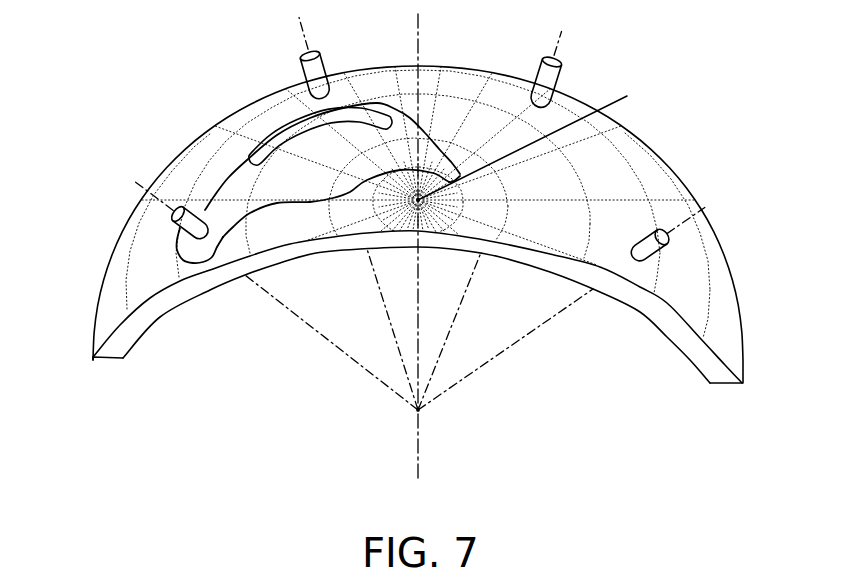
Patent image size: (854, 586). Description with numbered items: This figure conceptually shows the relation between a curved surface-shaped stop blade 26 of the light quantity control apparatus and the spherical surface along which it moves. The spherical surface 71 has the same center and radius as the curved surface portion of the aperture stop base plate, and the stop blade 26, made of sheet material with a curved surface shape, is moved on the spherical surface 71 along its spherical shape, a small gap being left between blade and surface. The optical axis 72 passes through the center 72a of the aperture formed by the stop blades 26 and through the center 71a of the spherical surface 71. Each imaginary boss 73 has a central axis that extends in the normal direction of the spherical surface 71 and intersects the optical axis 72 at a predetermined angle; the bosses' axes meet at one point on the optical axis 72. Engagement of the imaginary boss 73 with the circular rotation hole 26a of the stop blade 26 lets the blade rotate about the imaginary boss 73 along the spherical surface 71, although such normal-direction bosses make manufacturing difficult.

The spherical surface 71 is at (104, 330).
The center of the spherical surface 71a is at (421, 411).
The optical axis 72 is at (420, 31).
The center of the aperture 72a is at (542, 140).
The imaginary boss 73 is at (181, 209).
The stop blade 26 is at (317, 188).
The rotation hole 26a is at (199, 221).